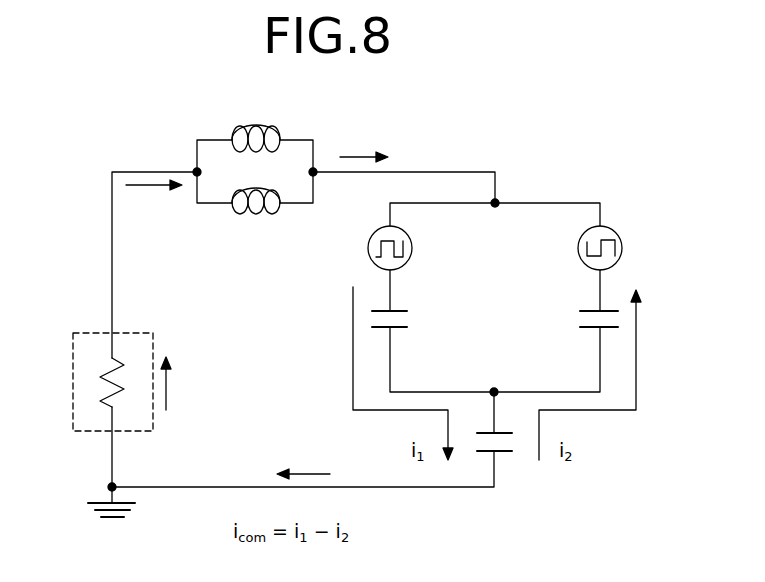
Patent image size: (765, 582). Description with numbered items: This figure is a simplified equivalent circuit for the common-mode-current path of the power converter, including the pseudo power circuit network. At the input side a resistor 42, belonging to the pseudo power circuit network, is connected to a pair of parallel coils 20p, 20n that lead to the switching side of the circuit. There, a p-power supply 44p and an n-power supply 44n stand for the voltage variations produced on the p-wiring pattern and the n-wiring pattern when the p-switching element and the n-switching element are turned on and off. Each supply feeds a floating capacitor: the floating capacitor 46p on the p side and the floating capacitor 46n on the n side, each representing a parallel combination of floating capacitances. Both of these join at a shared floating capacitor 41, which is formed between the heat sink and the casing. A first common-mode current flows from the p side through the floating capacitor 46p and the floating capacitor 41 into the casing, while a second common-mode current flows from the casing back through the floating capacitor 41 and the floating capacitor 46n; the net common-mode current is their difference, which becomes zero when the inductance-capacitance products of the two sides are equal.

The coil (positive side) 20p is at (247, 125).
The coil (negative side) 20n is at (252, 214).
The p-power supply 44p is at (412, 246).
The n-power supply 44n is at (578, 250).
The floating capacitor 46p is at (395, 310).
The floating capacitor 46n is at (586, 328).
The floating capacitor 41 is at (512, 452).
The resistor 42 is at (78, 333).